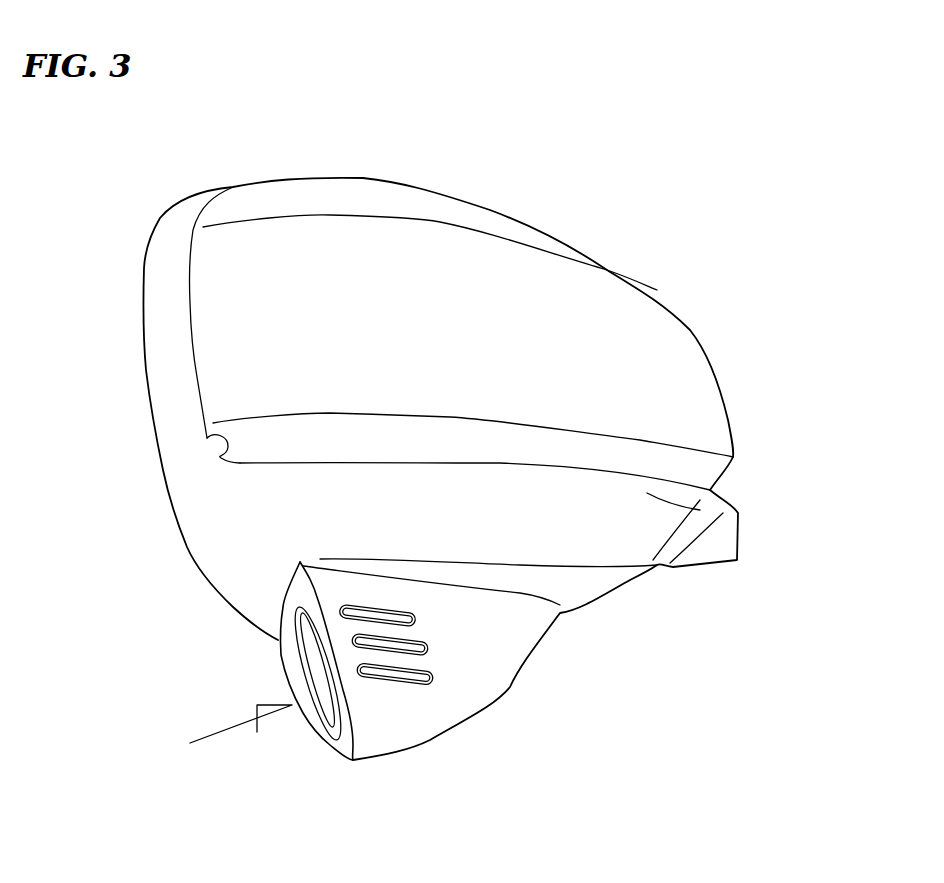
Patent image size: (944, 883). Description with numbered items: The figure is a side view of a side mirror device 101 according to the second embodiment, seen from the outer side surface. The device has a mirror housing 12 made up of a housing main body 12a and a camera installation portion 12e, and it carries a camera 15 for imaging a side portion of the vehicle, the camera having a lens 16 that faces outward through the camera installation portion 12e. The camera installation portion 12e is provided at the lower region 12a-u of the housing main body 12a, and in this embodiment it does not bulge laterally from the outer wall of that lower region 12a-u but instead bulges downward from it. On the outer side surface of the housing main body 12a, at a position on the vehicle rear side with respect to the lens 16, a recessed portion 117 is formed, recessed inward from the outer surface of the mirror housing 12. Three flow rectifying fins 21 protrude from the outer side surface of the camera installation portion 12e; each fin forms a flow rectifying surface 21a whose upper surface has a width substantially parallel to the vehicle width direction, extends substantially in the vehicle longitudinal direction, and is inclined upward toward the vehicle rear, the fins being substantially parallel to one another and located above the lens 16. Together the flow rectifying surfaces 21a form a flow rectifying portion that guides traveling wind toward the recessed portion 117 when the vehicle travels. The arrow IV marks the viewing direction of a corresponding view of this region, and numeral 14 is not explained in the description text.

The side mirror device 101 is at (665, 183).
The mirror housing 12 is at (707, 340).
The recessed portion 117 is at (207, 438).
The housing main body 12a is at (687, 508).
The lower region of the housing main body 12a-u is at (583, 550).
The camera installation portion 12e is at (420, 731).
The camera cover 14 is at (290, 618).
The camera 15 is at (316, 745).
The lens 16 is at (320, 657).
The flow rectifying fin 21 is at (416, 620).
The flow rectifying surface 21a is at (388, 632).
The arrow IV is at (227, 733).